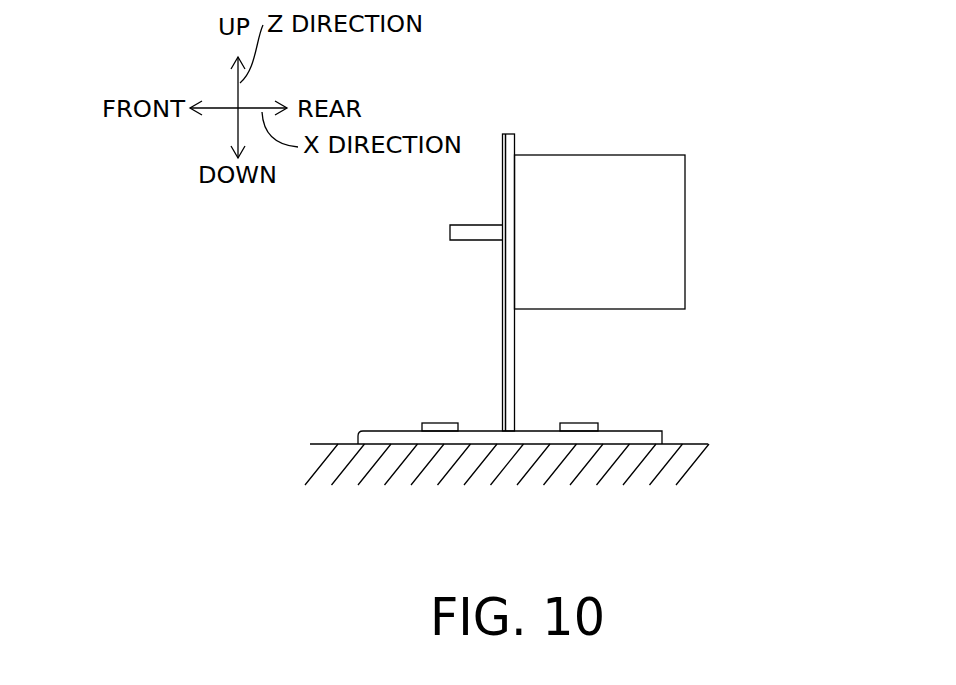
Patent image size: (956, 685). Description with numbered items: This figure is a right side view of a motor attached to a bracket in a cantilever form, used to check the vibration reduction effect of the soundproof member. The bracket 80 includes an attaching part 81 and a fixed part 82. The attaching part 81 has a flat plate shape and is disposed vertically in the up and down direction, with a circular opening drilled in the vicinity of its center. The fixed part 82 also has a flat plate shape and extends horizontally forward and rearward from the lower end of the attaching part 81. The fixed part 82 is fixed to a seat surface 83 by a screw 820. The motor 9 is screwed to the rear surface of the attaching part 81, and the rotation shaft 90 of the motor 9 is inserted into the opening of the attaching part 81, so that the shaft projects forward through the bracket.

The bracket 80 is at (535, 262).
The attaching part 81 is at (505, 265).
The fixed part 82 is at (642, 435).
The screw 820 is at (587, 425).
The seat surface 83 is at (343, 453).
The motor 9 is at (633, 182).
The rotation shaft 90 is at (477, 227).